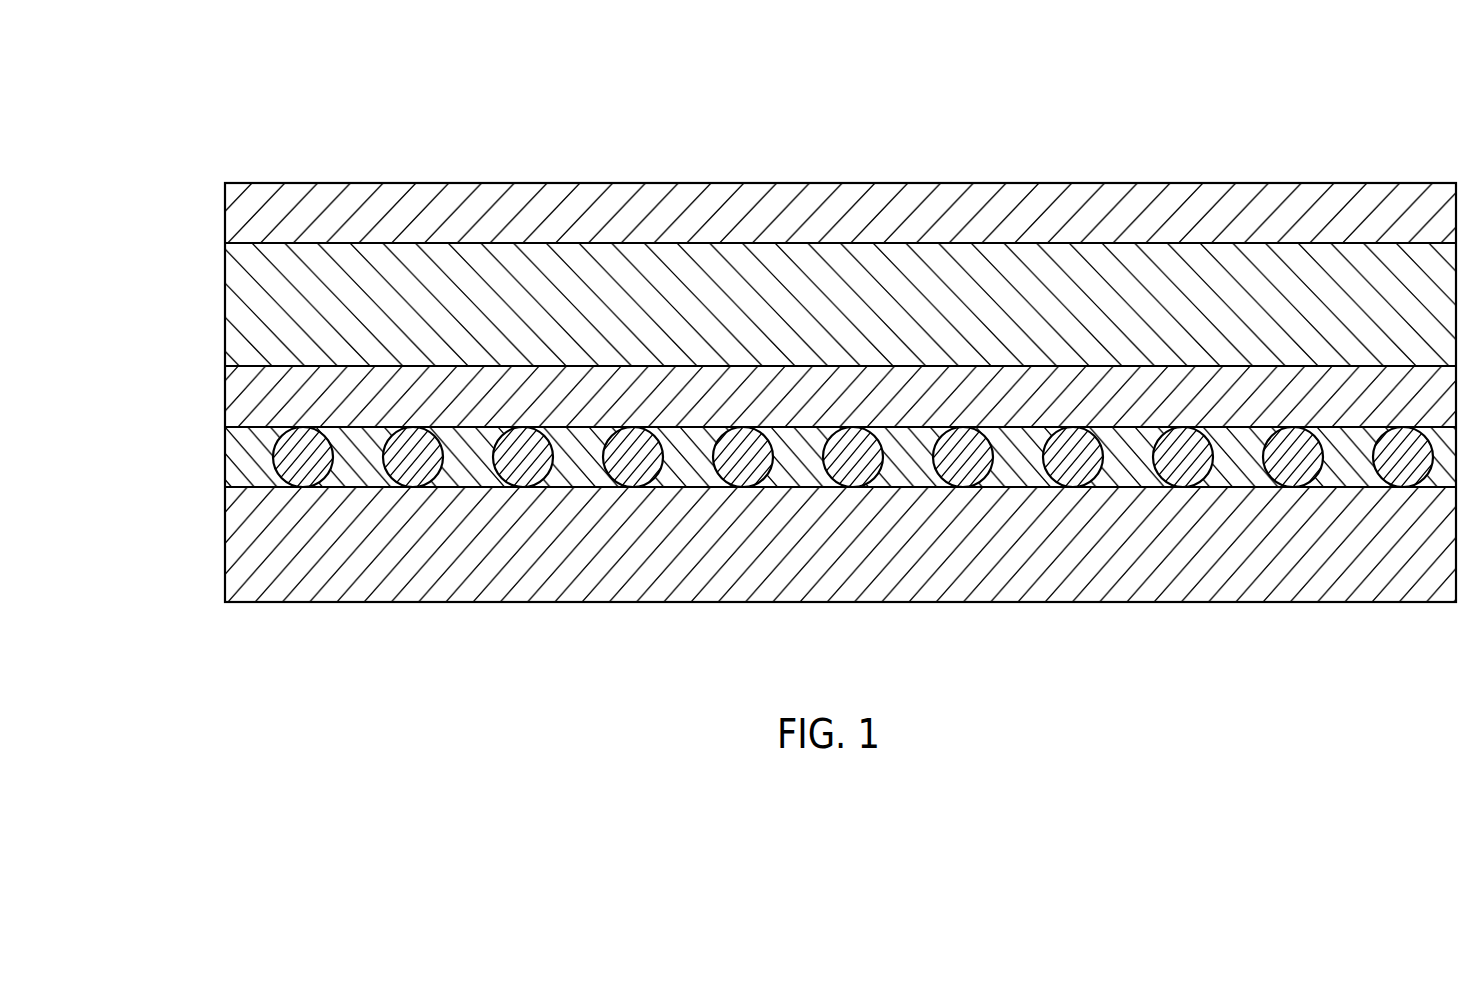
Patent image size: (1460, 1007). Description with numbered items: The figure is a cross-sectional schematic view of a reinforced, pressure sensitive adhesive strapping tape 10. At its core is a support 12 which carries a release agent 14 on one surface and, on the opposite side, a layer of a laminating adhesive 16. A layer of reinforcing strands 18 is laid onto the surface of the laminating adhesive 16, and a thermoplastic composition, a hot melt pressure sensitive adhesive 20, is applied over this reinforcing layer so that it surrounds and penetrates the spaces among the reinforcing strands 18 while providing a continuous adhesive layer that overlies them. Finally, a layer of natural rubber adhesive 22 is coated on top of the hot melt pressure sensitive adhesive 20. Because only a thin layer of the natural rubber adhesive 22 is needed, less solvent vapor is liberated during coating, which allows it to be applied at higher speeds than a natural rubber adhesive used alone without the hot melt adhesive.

The reinforced strapping tape 10 is at (487, 158).
The support 12 is at (232, 305).
The release agent 14 is at (807, 190).
The laminating adhesive 16 is at (240, 395).
The reinforcing strands 18 is at (280, 465).
The hot melt pressure sensitive adhesive 20 is at (480, 478).
The natural rubber adhesive 22 is at (1003, 595).